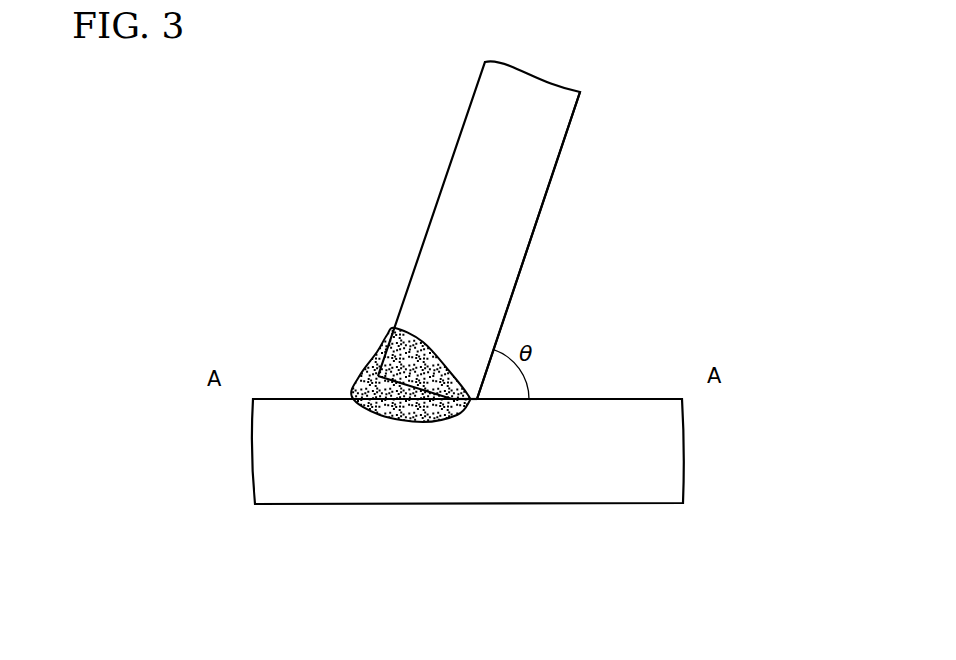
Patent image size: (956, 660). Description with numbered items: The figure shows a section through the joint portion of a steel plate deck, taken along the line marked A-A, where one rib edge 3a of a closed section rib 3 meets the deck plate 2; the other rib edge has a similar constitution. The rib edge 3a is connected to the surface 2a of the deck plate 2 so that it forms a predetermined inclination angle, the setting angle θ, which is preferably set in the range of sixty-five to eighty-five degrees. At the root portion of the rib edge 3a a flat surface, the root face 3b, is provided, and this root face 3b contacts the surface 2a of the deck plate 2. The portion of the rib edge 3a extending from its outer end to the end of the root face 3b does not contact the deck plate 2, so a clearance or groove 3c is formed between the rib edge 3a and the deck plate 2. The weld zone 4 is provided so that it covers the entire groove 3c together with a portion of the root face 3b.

The deck plate 2 is at (670, 483).
The surface of the deck plate 2a is at (650, 399).
The closed section rib 3 is at (490, 98).
The rib edge 3a is at (467, 409).
The root face 3b is at (473, 400).
The groove 3c is at (386, 398).
The weld zone 4 is at (367, 362).